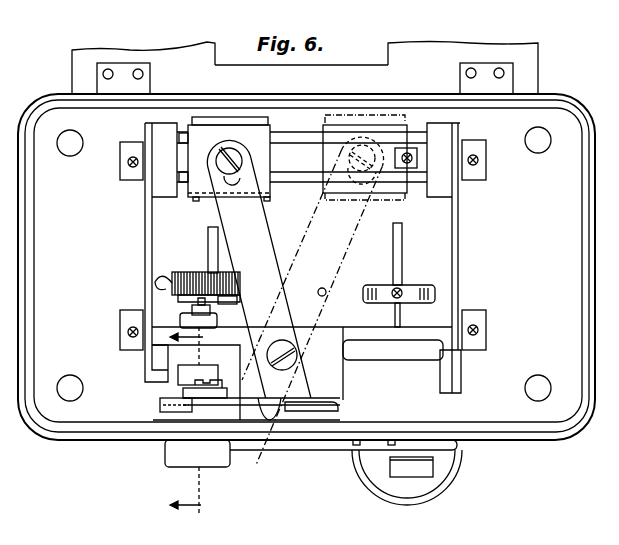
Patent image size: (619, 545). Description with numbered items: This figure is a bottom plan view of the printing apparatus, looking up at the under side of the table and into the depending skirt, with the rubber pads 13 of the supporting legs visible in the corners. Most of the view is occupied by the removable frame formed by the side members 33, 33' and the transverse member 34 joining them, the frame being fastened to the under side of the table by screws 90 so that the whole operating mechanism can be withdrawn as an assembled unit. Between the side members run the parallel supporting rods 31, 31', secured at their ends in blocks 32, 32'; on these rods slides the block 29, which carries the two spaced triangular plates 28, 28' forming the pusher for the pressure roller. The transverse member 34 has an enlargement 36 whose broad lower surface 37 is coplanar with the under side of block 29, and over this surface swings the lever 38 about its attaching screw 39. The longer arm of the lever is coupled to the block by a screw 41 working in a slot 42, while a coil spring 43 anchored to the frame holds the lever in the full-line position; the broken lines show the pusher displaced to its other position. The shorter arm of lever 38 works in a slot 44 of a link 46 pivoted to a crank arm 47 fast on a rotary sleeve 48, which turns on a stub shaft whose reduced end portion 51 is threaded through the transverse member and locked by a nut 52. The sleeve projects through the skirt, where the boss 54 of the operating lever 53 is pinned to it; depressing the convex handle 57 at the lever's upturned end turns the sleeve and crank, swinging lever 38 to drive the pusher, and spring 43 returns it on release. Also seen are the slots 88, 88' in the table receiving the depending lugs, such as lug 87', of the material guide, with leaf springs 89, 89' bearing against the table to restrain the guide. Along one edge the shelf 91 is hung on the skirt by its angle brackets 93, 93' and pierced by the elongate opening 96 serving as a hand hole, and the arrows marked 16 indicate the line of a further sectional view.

The pads 13 is at (77, 138).
The direction arrow / axis 16 is at (200, 422).
The triangular plate 28 is at (299, 135).
The triangular plate 28' is at (214, 208).
The slidable block 29 is at (229, 161).
The supporting rod 31 is at (302, 128).
The supporting rod 31' is at (302, 186).
The block 32 is at (161, 160).
The block 32' is at (443, 160).
The side member 33 is at (141, 252).
The side member 33' is at (478, 258).
The transverse member 34 is at (377, 342).
The enlargement 36 is at (344, 378).
The lower surface 37 is at (301, 355).
The lever 38 is at (259, 280).
The attaching screw 39 is at (324, 297).
The screw 41 is at (243, 163).
The slot 42 is at (228, 183).
The coil spring 43 is at (204, 282).
The slot 44 is at (257, 465).
The link 46 is at (338, 405).
The crank arm 47 is at (193, 395).
The rotary sleeve 48 is at (193, 413).
The reduced end portion 51 is at (192, 311).
The nut 52 is at (198, 319).
The operating lever 53 is at (322, 451).
The boss 54 is at (176, 457).
The handle 57 is at (427, 485).
The depending lug 87' is at (403, 281).
The slot 88 is at (197, 250).
The slot 88' is at (419, 252).
The leaf spring 89 is at (231, 312).
The leaf spring 89' is at (419, 314).
The screws 90 is at (128, 163).
The shelf 91 is at (439, 56).
The angle bracket 93 is at (123, 56).
The angle bracket 93' is at (490, 52).
The elongate opening 96 is at (378, 57).